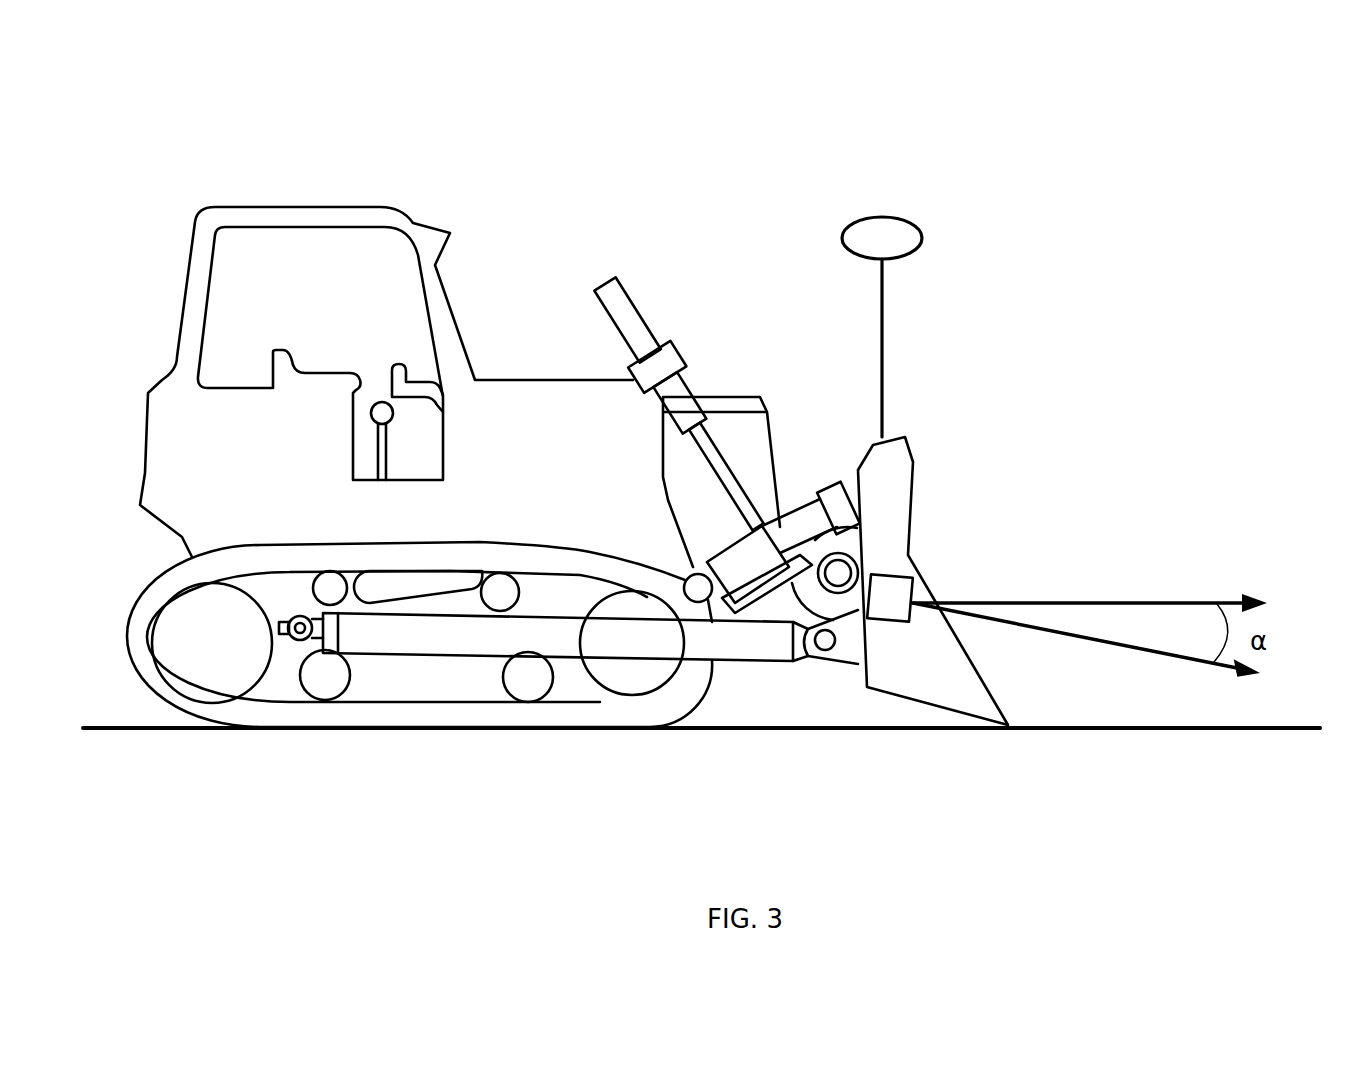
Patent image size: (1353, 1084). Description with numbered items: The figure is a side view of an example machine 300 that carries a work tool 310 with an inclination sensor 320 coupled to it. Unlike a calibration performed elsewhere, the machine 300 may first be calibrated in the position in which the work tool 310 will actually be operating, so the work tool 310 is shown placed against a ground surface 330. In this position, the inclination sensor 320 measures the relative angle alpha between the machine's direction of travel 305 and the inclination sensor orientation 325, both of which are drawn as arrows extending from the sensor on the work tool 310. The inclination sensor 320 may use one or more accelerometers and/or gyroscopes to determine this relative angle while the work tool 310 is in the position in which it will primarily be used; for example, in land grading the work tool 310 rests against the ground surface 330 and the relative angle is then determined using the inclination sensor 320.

The machine 300 is at (198, 125).
The direction of travel 305 is at (1090, 576).
The work tool 310 is at (913, 455).
The inclination sensor 320 is at (875, 609).
The inclination sensor orientation 325 is at (1086, 664).
The ground surface 330 is at (701, 749).